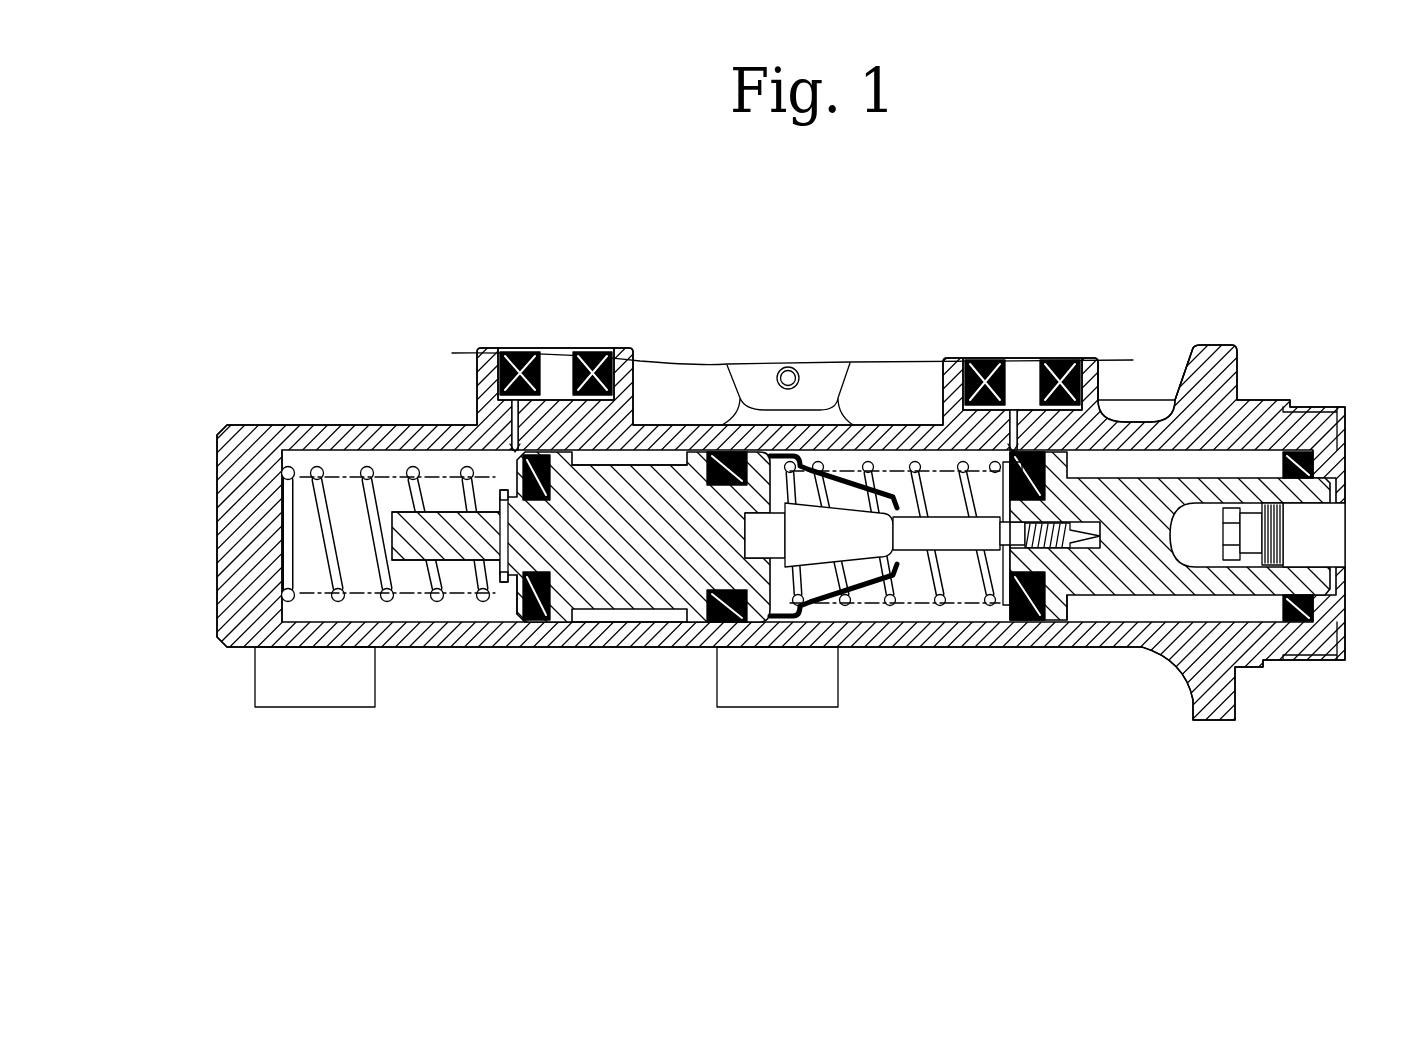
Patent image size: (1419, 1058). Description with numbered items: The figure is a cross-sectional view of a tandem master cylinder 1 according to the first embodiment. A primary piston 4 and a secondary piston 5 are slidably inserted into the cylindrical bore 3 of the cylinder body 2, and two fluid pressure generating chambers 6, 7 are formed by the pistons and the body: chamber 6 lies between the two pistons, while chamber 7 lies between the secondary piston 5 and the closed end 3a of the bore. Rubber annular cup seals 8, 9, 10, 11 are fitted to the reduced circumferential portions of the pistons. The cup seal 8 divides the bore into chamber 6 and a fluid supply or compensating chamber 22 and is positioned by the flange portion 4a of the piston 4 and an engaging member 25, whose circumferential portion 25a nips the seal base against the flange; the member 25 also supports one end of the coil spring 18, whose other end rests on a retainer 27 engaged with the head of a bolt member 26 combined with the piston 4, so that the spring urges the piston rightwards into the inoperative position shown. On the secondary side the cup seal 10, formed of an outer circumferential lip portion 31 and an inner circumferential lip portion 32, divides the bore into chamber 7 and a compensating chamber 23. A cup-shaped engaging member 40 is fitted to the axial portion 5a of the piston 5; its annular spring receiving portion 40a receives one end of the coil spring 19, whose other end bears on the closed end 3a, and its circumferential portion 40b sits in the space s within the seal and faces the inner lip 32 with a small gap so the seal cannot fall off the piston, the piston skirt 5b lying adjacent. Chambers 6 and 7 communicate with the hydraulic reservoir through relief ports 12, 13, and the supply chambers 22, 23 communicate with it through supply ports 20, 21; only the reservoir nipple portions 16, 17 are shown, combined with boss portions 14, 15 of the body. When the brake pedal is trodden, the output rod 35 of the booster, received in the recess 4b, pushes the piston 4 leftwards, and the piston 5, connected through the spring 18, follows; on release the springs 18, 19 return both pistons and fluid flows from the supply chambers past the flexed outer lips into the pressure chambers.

The master cylinder 1 is at (1290, 230).
The cylinder body 2 is at (602, 647).
The cylindrical bore 3 is at (878, 625).
The closed end of the cylindrical bore 3a is at (282, 555).
The primary piston 4 is at (1115, 575).
The flange portion 4a is at (1050, 560).
The recess 4b is at (1205, 580).
The secondary piston 5 is at (587, 583).
The axial portion 5a is at (400, 540).
The primary piston skirt 5b is at (548, 580).
The fluid pressure generating chamber 6 is at (913, 480).
The fluid pressure generating chamber 7 is at (345, 500).
The cup seal 8 is at (1035, 575).
The cup seal 9 is at (1290, 620).
The cup seal 10 is at (525, 603).
The cup seal 11 is at (718, 600).
The relief port 12 is at (1013, 455).
The relief port 13 is at (525, 470).
The boss portion 14 is at (1095, 430).
The boss portion 15 is at (605, 430).
The nipple portion 16 is at (1000, 430).
The nipple portion 17 is at (583, 437).
The coil spring 18 is at (940, 600).
The coil spring 19 is at (432, 600).
The supply port 20 is at (1100, 396).
The supply port 21 is at (560, 460).
The fluid supply or compensating chamber 22 is at (1240, 400).
The fluid supply or compensating chamber 23 is at (643, 613).
The engaging member 25 is at (995, 590).
The circumferential portion 25a is at (1020, 462).
The bolt member 26 is at (920, 540).
The retainer 27 is at (832, 595).
The outer circumferential lip portion 31 is at (540, 452).
The inner circumferential lip portion 32 is at (570, 455).
The output rod 35 is at (1305, 452).
The engaging member 40 is at (478, 460).
The annular spring receiving portion 40a is at (470, 490).
The circumferential portion 40b is at (520, 600).
The space s is at (483, 355).